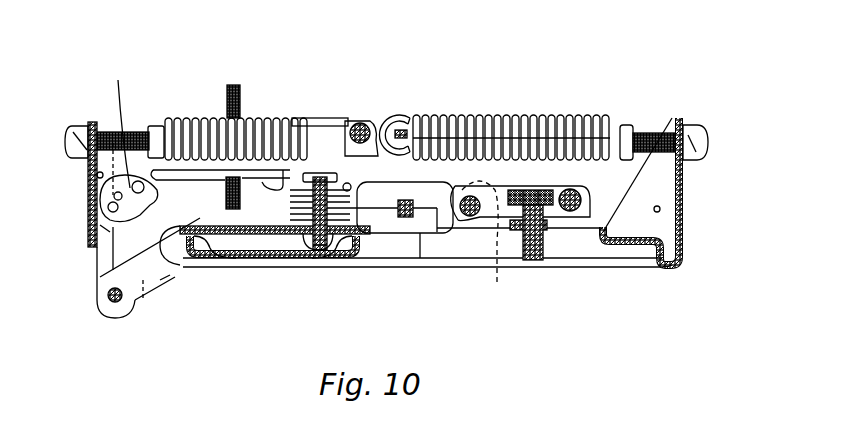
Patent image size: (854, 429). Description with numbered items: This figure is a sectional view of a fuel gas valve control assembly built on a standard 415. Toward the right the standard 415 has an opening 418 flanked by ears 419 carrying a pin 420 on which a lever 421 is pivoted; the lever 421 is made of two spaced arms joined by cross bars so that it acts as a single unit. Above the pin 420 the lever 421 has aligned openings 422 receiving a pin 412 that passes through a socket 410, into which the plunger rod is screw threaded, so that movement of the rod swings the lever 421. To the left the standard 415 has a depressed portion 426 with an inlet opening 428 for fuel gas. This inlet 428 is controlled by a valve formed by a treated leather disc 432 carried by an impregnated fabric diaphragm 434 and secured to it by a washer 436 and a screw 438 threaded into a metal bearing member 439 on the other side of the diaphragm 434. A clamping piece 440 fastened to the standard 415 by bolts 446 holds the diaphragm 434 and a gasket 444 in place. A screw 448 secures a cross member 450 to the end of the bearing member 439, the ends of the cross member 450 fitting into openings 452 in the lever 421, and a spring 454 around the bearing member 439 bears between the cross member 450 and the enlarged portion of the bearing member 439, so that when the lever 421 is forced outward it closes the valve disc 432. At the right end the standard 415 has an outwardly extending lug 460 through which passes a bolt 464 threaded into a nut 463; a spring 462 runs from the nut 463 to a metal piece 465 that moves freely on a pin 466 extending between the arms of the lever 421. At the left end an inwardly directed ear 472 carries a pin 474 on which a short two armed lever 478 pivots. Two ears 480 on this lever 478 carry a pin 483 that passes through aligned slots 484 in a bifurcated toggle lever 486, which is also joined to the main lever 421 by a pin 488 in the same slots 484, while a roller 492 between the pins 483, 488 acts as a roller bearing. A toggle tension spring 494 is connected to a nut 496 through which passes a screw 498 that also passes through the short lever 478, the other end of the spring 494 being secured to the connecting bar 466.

The socket 410 is at (550, 193).
The pin 412 is at (537, 193).
The standard 415 is at (675, 270).
The opening 418 is at (545, 262).
The ears 419 is at (495, 243).
The pin 420 is at (470, 218).
The lever 421 is at (427, 175).
The aligned openings 422 is at (553, 225).
The depressed portion 426 is at (258, 268).
The inlet opening 428 is at (313, 262).
The treated leather disc 432 is at (290, 258).
The impregnated fabric diaphragm 434 is at (230, 258).
The washer 436 is at (362, 253).
The screw 438 is at (335, 252).
The metal bearing member 439 is at (388, 201).
The clamping piece 440 is at (114, 228).
The gasket 444 is at (168, 292).
The bolts 446 is at (420, 234).
The screw 448 is at (351, 187).
The cross member 450 is at (242, 105).
The openings 452 is at (296, 172).
The spring 454 is at (275, 186).
The lug 460 is at (684, 199).
The spring 462 is at (543, 123).
The nut 463 is at (628, 128).
The bolt 464 is at (650, 133).
The metal piece 465 is at (377, 123).
The pin 466 is at (352, 120).
The ear 472 is at (143, 303).
The pin 474 is at (108, 298).
The short two armed lever 478 is at (100, 263).
The ears 480 is at (100, 227).
The pin 483 is at (110, 207).
The aligned slots 484 is at (144, 187).
The toggle lever 486 is at (122, 126).
The pin 488 is at (140, 188).
The roller 492 is at (118, 193).
The toggle tension spring 494 is at (290, 118).
The nut 496 is at (152, 128).
The screw 498 is at (100, 127).